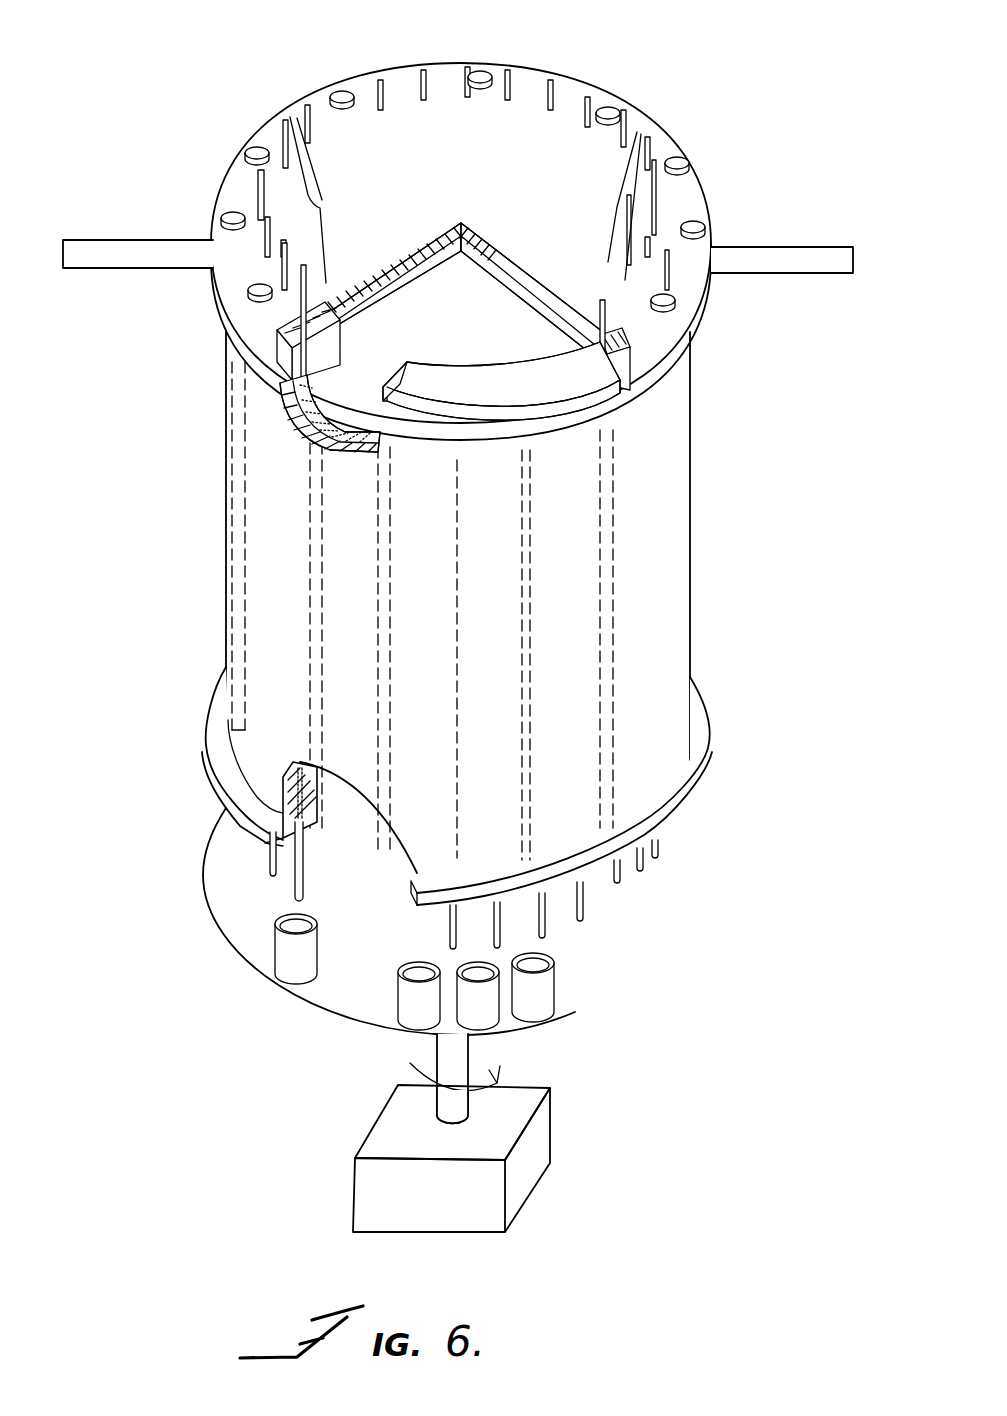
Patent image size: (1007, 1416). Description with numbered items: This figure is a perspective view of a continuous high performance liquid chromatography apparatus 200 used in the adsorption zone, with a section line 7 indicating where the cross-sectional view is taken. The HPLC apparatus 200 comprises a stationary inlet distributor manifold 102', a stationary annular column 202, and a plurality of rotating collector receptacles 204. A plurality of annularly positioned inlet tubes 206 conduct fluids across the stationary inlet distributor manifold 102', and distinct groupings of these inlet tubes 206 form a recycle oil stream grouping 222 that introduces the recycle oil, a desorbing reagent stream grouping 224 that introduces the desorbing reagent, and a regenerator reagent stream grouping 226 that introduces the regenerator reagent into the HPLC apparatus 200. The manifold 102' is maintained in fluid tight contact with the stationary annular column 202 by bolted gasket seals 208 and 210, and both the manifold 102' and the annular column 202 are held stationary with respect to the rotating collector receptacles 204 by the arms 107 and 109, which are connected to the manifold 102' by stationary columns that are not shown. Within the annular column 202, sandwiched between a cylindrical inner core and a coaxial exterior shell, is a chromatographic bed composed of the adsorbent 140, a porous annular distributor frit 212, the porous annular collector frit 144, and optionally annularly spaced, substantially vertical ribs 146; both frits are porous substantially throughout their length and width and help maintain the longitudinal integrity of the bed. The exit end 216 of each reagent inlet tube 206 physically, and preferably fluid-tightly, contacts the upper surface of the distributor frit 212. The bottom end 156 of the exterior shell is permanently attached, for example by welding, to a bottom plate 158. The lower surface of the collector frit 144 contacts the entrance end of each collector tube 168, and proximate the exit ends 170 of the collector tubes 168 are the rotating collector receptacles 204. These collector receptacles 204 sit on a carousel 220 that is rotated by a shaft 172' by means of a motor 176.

The continuous HPLC apparatus 200 is at (860, 413).
The stationary inlet distributor manifold 102' is at (501, 251).
The arm 107 is at (125, 214).
The arm 109 is at (793, 247).
The recycle oil stream grouping 222 is at (297, 48).
The inlet tube 206 is at (600, 100).
The desorbing reagent stream grouping 224 is at (617, 206).
The regenerator reagent stream grouping 226 is at (318, 196).
The bolted gasket seal 210 is at (340, 338).
The bolted gasket seal 208 is at (283, 374).
The porous annular distributor frit 212 is at (320, 378).
The exit end 216 is at (285, 383).
The adsorbent 140 is at (347, 447).
The vertical ribs 146 is at (227, 548).
The stationary annular column 202 is at (694, 542).
The bottom end of the exterior shell 156 is at (678, 760).
The bottom plate 158 is at (212, 742).
The porous annular collector frit 144 is at (262, 796).
The exit end 170 is at (266, 856).
The collector tube 168 is at (304, 875).
The rotating collector receptacle 204 is at (277, 962).
The carousel 220 is at (322, 1000).
The shaft 172' is at (519, 1082).
The motor 176 is at (495, 1209).
The section line 7- 7 is at (575, 400).